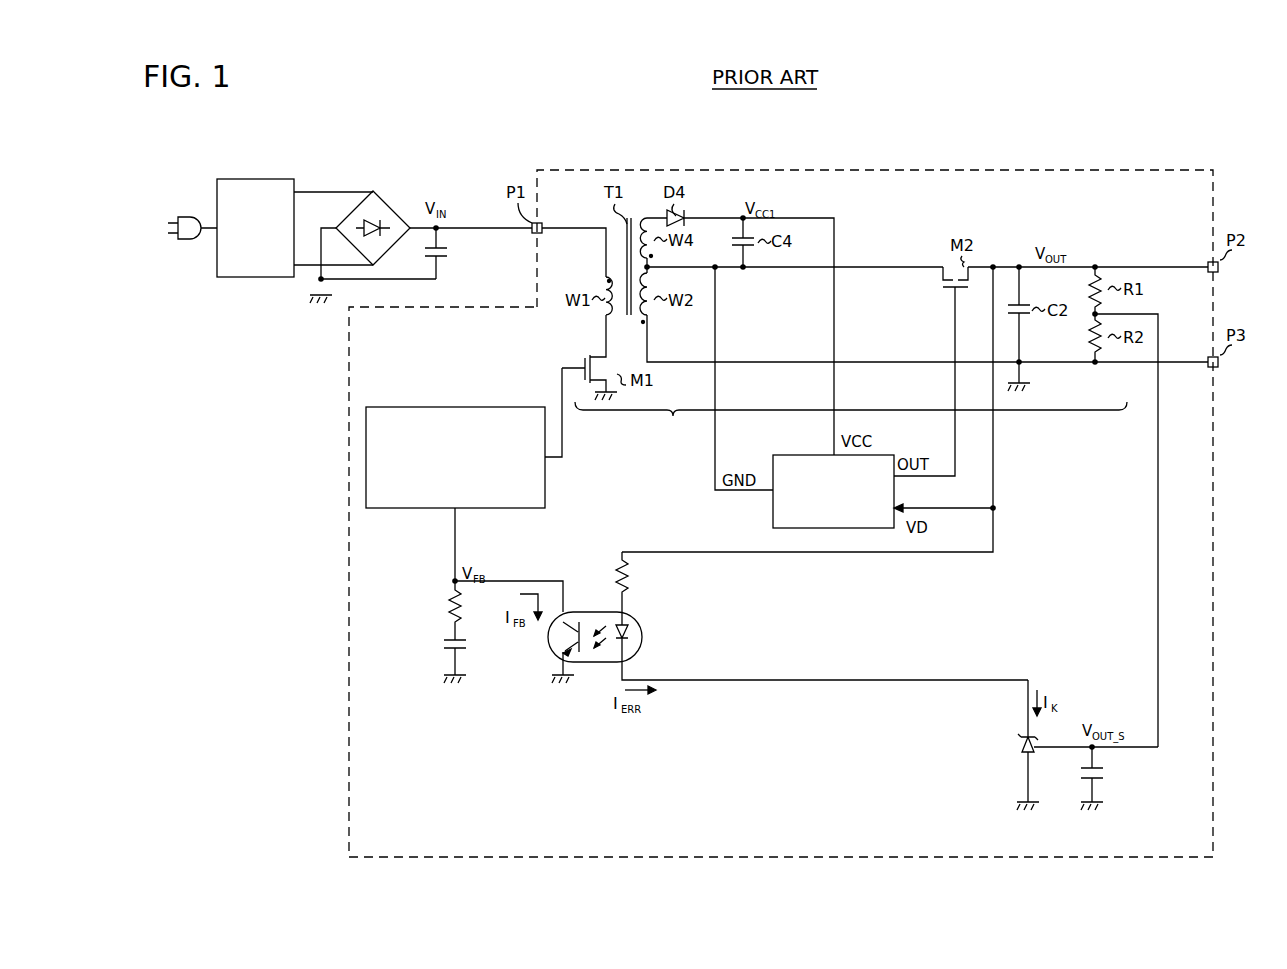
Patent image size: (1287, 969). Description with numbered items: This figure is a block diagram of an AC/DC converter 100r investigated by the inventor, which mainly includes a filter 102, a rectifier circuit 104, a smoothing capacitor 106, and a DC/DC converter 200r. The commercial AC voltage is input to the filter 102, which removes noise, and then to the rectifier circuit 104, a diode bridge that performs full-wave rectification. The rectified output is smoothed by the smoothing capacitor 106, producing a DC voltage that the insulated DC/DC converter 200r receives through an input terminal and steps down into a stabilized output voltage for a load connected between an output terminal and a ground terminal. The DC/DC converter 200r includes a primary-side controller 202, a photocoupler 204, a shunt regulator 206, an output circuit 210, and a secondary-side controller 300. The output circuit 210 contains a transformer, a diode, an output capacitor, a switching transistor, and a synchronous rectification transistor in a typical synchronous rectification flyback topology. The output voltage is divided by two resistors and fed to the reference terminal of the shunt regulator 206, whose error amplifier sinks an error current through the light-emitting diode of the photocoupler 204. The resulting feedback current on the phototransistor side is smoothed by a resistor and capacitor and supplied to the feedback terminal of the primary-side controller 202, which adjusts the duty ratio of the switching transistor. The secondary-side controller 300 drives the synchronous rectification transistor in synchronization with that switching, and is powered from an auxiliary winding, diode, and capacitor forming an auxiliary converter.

The AC/DC converter 100r is at (262, 842).
The filter 102 is at (259, 172).
The rectifier circuit 104 is at (394, 211).
The smoothing capacitor 106 is at (447, 256).
The DC/DC converter 200r is at (913, 162).
The primary-side controller 202 is at (469, 407).
The photocoupler 204 is at (587, 612).
The shunt regulator 206 is at (1013, 749).
The output circuit 210 is at (851, 424).
The secondary-side controller 300 is at (773, 507).